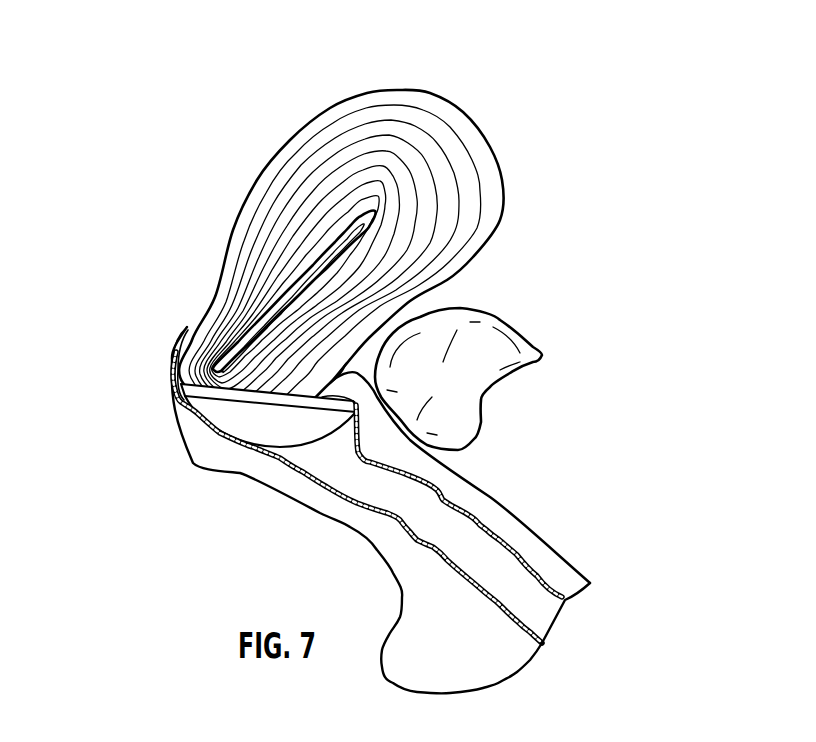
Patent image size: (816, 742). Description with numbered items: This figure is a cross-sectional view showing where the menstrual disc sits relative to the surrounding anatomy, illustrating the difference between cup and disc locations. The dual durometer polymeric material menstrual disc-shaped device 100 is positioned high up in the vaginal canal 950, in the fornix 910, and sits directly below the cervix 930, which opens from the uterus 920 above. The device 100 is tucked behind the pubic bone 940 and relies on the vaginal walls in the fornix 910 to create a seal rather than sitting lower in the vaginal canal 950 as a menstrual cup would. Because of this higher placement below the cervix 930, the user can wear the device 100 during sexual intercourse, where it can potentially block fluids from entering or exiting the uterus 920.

The dual durometer polymeric material menstrual disc-shaped device 100 is at (220, 407).
The fornix 910 is at (177, 350).
The uterus 920 is at (480, 183).
The cervix 930 is at (248, 390).
The pubic bone 940 is at (536, 350).
The vaginal canal 950 is at (453, 533).